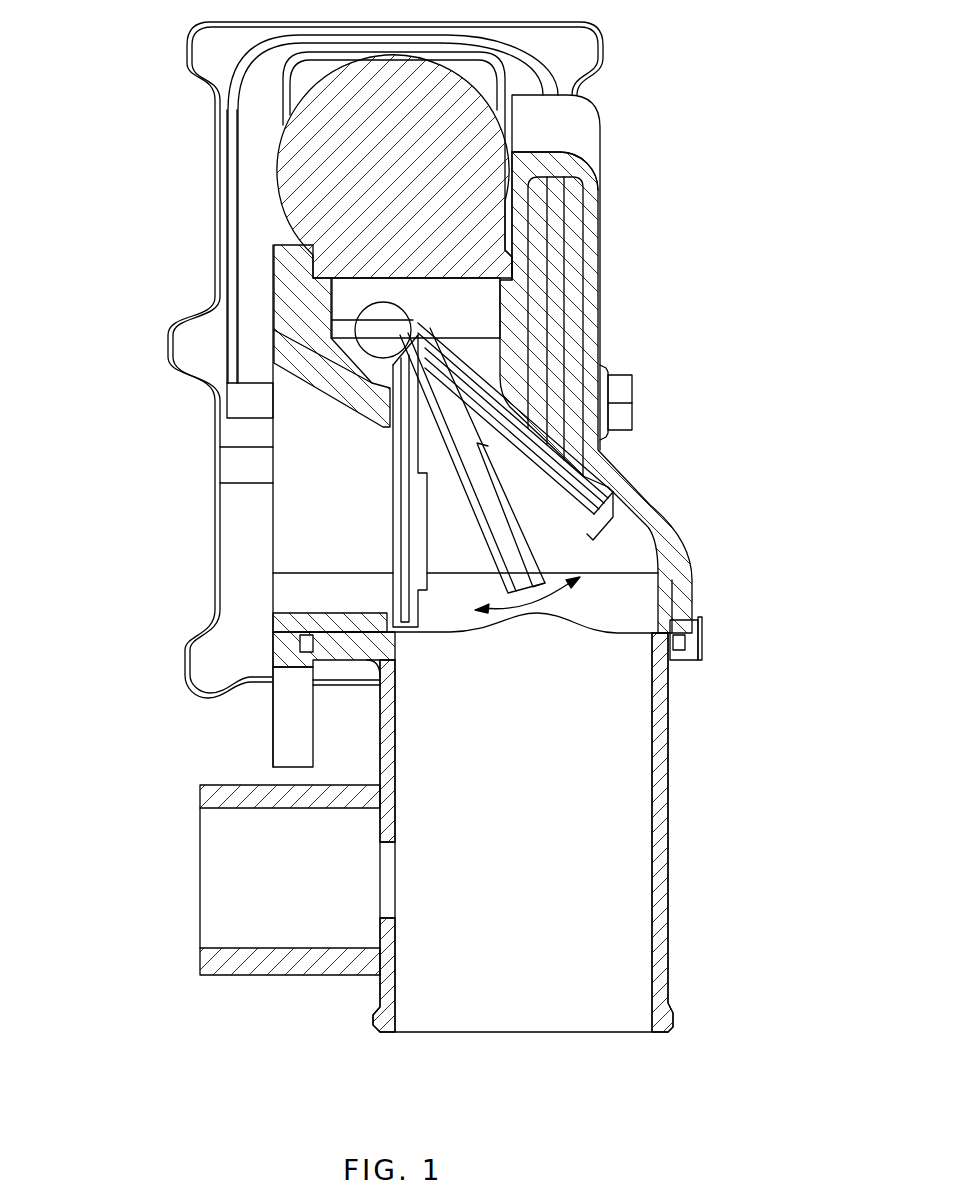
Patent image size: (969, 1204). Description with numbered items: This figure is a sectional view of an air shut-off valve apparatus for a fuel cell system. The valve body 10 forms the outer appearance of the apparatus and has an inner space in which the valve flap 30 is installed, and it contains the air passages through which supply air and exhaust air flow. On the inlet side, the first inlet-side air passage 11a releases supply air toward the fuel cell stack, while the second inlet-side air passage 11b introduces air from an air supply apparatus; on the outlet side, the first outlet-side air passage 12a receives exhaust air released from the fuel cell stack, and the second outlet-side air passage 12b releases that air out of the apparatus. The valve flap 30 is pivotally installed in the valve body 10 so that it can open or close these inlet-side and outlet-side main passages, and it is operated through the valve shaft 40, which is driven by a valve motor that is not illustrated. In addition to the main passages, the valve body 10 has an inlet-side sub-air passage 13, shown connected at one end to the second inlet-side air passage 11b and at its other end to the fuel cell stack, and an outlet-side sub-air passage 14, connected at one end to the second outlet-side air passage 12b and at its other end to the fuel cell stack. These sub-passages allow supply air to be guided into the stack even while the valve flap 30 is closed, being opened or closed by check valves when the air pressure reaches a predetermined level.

The valve body 10 is at (677, 500).
The first inlet-side air passage 11a is at (375, 438).
The first outlet-side air passage 12a is at (305, 525).
The second inlet-side air passage 11b is at (520, 869).
The second outlet-side air passage 12b is at (537, 1003).
The inlet-side sub-air passage 13 is at (226, 880).
The outlet-side sub-air passage 14 is at (258, 873).
The valve flap 30 is at (572, 483).
The valve shaft 40 is at (388, 322).